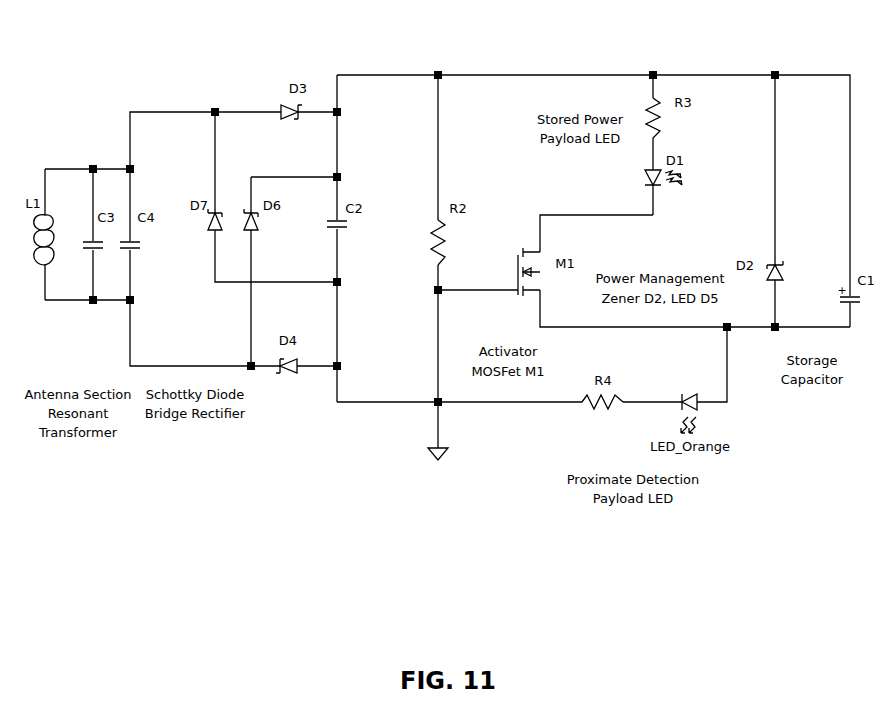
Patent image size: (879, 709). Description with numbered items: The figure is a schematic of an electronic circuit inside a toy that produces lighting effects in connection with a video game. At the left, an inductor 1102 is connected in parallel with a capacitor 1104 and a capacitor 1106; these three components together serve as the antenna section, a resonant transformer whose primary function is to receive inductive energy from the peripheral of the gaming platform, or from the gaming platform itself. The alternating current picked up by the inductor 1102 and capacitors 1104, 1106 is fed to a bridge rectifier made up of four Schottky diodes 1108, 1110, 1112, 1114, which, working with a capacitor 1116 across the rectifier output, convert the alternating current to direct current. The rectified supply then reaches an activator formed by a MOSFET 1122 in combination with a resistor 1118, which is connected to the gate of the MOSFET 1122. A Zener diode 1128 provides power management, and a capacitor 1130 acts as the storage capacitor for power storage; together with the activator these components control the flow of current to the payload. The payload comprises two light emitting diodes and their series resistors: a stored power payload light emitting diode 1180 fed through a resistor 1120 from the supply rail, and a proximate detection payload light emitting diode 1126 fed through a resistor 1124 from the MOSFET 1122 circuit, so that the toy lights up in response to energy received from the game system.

The inductor 1102 is at (50, 232).
The capacitor 1104 is at (100, 250).
The capacitor 1106 is at (138, 250).
The Schottky diode 1108 is at (218, 211).
The Schottky diode 1110 is at (256, 232).
The Schottky diode 1112 is at (281, 108).
The Schottky diode 1114 is at (296, 373).
The capacitor 1116 is at (342, 228).
The resistor 1118 is at (437, 225).
The resistor 1120 is at (666, 100).
The MOSFET 1122 is at (518, 297).
The resistor 1124 is at (590, 410).
The light emitting diode 1126 is at (697, 405).
The Zener diode 1128 is at (784, 262).
The capacitor 1130 is at (840, 301).
The light emitting diode 1180 is at (688, 167).